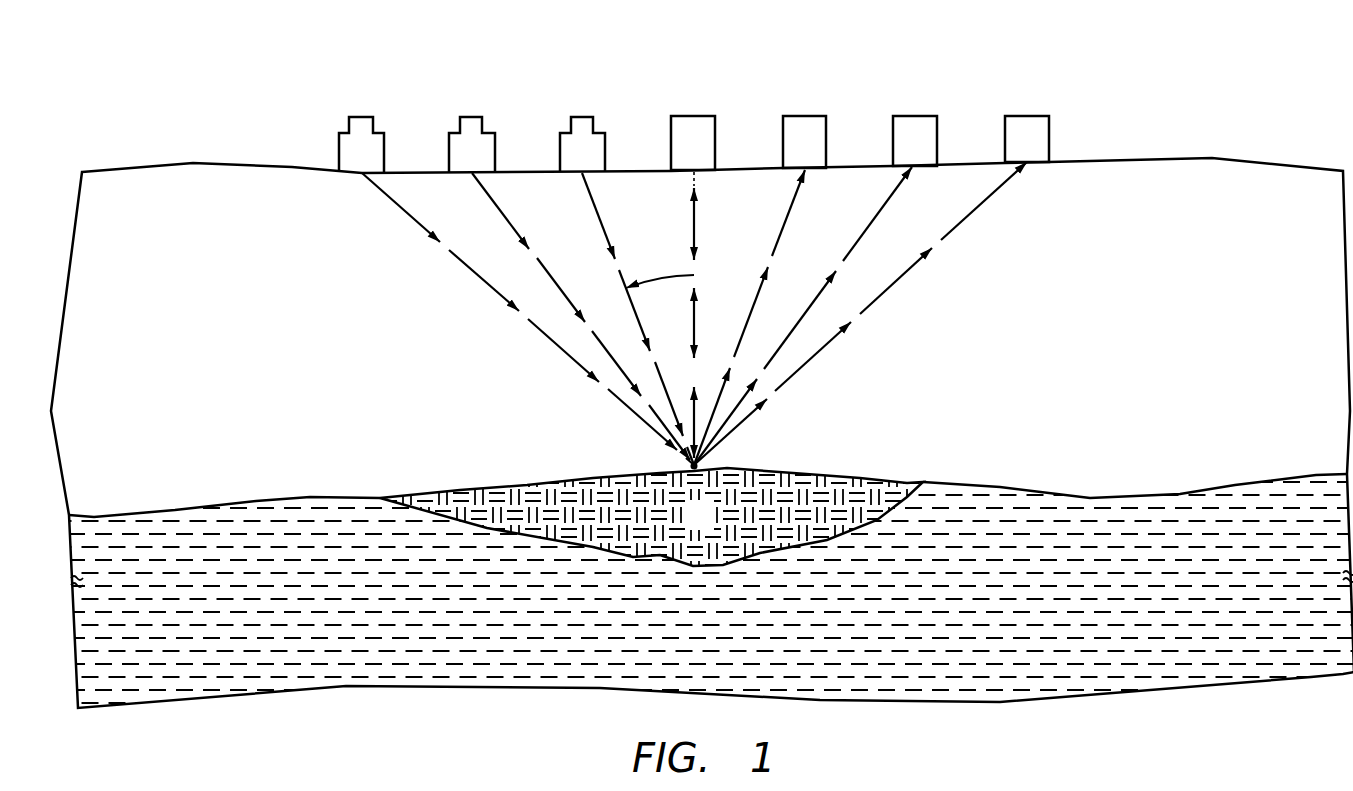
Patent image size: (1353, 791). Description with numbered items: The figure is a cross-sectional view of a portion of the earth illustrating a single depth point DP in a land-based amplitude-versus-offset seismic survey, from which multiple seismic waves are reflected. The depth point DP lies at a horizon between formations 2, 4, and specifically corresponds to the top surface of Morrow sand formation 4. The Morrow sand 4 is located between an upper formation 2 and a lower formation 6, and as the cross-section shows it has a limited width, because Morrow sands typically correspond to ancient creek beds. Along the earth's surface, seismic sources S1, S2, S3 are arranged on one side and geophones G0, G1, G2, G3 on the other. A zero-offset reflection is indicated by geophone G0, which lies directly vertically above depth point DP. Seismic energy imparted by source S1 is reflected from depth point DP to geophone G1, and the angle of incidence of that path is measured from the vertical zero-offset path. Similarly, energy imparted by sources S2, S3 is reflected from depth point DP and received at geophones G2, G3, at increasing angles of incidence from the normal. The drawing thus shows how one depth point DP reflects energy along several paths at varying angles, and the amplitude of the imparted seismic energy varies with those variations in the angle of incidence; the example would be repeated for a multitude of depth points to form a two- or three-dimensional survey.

The formation 2 is at (1166, 351).
The Morrow sand formation 4 is at (708, 527).
The formation 6 is at (709, 641).
The source S1 is at (582, 117).
The source S2 is at (471, 117).
The source S3 is at (362, 117).
The geophone G0 is at (698, 116).
The geophone G1 is at (803, 116).
The geophone G2 is at (915, 116).
The geophone G3 is at (1027, 116).
The depth point DP is at (690, 466).